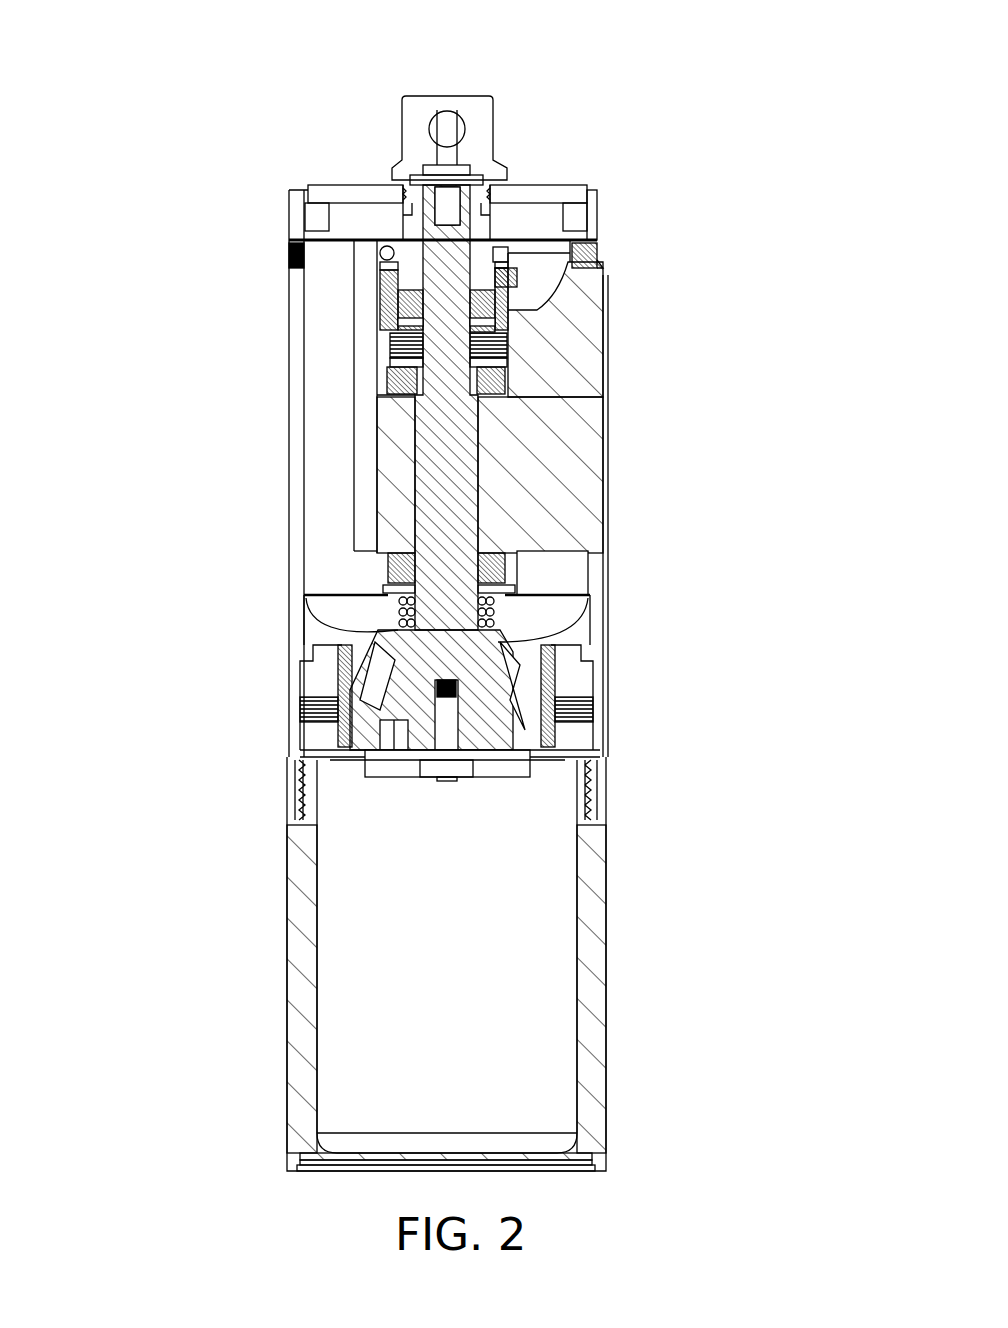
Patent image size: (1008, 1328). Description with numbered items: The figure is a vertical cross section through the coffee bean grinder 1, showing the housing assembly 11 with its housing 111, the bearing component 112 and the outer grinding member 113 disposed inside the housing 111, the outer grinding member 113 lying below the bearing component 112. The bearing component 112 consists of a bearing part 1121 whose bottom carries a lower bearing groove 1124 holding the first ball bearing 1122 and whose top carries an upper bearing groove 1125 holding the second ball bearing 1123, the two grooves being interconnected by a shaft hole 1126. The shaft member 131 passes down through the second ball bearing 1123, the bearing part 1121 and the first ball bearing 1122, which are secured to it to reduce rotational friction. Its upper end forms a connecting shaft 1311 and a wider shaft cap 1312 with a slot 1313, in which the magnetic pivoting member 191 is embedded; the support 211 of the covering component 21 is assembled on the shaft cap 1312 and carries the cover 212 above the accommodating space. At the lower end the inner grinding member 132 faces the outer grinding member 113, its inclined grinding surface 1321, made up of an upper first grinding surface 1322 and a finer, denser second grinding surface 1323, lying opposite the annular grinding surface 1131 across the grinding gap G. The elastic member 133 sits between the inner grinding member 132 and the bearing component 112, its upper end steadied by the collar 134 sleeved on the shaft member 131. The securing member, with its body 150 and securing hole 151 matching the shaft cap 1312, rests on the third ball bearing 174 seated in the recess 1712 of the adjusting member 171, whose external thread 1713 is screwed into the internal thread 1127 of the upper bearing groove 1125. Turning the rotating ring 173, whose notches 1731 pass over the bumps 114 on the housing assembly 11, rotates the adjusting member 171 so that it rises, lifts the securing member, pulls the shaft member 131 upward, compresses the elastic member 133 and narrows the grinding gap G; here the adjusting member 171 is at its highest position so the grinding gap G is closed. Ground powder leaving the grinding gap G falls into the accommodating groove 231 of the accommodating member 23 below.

The coffee bean grinder 1 is at (152, 91).
The housing assembly 11 is at (487, 471).
The housing 111 is at (608, 552).
The bearing component 112 is at (452, 405).
The outer grinding member 113 is at (487, 710).
The bumps 114 is at (603, 190).
The bearing part 1121 is at (393, 515).
The first ball bearing 1122 is at (390, 554).
The second ball bearing 1123 is at (392, 392).
The lower bearing groove 1124 is at (375, 585).
The upper bearing groove 1125 is at (378, 368).
The shaft hole 1126 is at (500, 466).
The internal thread 1127 is at (390, 348).
The annular grinding surface 1131 is at (330, 685).
The shaft member 131 is at (591, 175).
The connecting shaft 1311 is at (513, 305).
The shaft cap 1312 is at (465, 213).
The slot 1313 is at (445, 118).
The inner grinding member 132 is at (397, 693).
The inclined grinding surface 1321 is at (544, 696).
The first grinding surface 1322 is at (528, 668).
The second grinding surface 1323 is at (596, 725).
The elastic member 133 is at (385, 627).
The collar 134 is at (398, 602).
The body 150 is at (398, 237).
The securing hole 151 is at (412, 203).
The adjusting member 171 is at (356, 264).
The recess 1712 is at (388, 262).
The external thread 1713 is at (390, 323).
The rotating ring 173 is at (514, 219).
The notches 1731 is at (606, 250).
The third ball bearing 174 is at (385, 272).
The pivoting member 191 is at (420, 112).
The covering component 21 is at (458, 124).
The support 211 is at (480, 207).
The cover 212 is at (550, 192).
The accommodating member 23 is at (450, 964).
The accommodating groove 231 is at (528, 940).
The grinding gap G is at (566, 757).